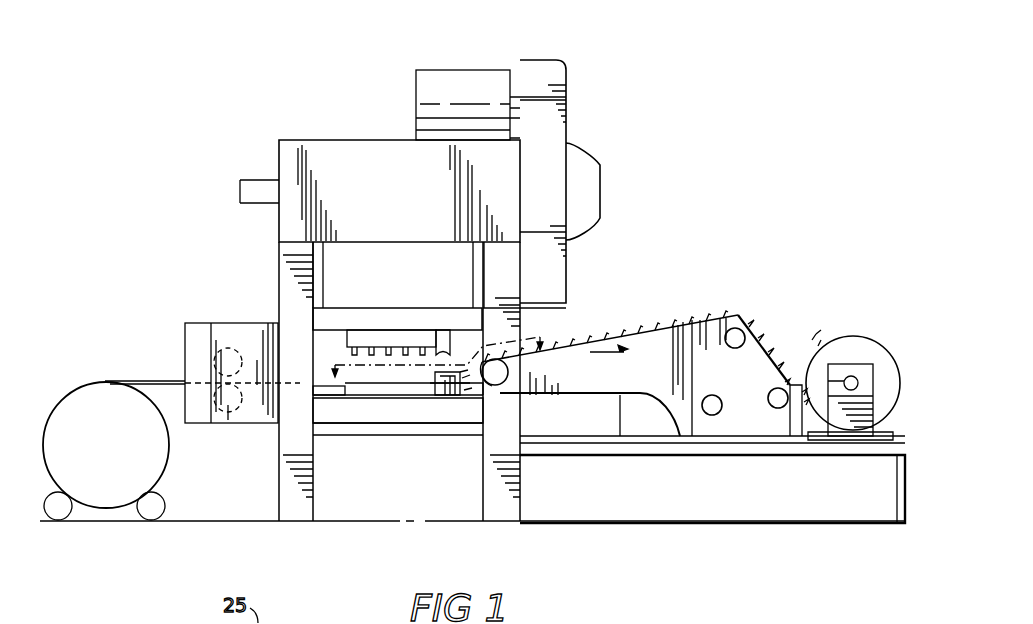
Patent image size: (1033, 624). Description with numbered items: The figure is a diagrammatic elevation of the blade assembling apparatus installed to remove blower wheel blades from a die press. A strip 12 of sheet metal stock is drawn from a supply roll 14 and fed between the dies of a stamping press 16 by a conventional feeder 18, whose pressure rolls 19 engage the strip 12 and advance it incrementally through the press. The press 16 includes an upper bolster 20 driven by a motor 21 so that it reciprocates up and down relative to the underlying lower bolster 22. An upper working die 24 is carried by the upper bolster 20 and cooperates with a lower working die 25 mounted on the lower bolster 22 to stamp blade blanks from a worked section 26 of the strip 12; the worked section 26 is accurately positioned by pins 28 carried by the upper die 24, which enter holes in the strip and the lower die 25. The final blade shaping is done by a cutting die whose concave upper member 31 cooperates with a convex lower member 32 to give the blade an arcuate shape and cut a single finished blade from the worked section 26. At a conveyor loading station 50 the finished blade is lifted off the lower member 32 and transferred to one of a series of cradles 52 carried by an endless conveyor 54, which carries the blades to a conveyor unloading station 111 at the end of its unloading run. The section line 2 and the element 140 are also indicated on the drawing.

The section line 2- 2 is at (437, 344).
The strip 12 is at (140, 380).
The supply roll 14 is at (68, 386).
The stamping press 16 is at (342, 104).
The feeder 18 is at (200, 317).
The pressure rolls 19 is at (228, 347).
The upper bolster 20 is at (337, 312).
The motor 21 is at (458, 75).
The lower bolster 22 is at (346, 412).
The upper working die 24 is at (365, 338).
The lower working die 25 is at (362, 394).
The worked section 26 is at (394, 387).
The pins 28 is at (403, 352).
The concave upper member 31 is at (442, 340).
The convex lower member 32 is at (440, 392).
The conveyor loading station 50 is at (472, 396).
The cradles 52 is at (589, 344).
The endless conveyor 54 is at (676, 306).
The conveyor unloading station 111 is at (793, 372).
The take-up wheel 140 is at (869, 337).